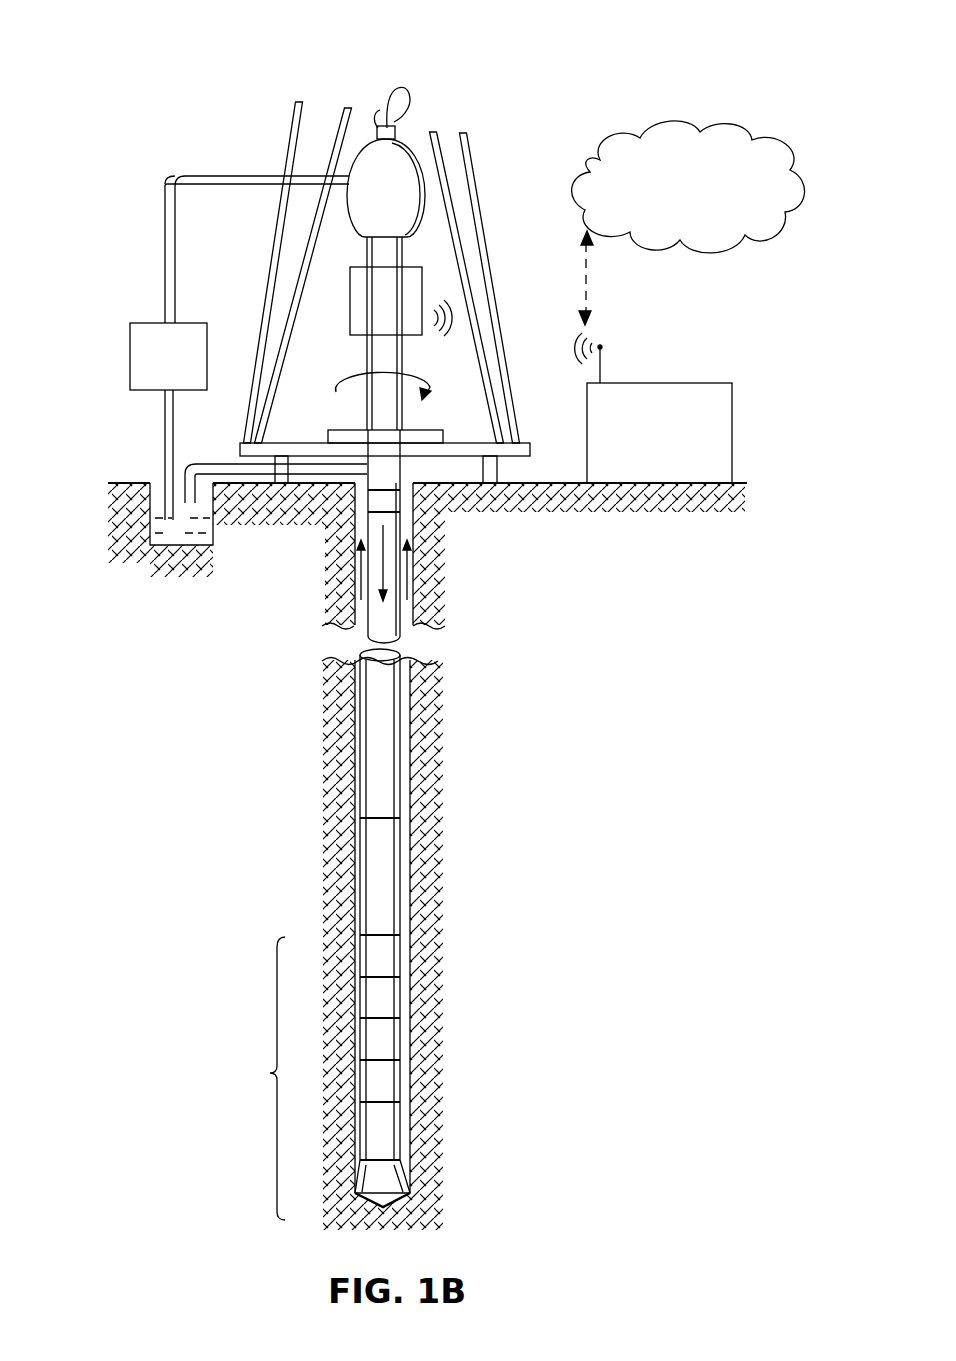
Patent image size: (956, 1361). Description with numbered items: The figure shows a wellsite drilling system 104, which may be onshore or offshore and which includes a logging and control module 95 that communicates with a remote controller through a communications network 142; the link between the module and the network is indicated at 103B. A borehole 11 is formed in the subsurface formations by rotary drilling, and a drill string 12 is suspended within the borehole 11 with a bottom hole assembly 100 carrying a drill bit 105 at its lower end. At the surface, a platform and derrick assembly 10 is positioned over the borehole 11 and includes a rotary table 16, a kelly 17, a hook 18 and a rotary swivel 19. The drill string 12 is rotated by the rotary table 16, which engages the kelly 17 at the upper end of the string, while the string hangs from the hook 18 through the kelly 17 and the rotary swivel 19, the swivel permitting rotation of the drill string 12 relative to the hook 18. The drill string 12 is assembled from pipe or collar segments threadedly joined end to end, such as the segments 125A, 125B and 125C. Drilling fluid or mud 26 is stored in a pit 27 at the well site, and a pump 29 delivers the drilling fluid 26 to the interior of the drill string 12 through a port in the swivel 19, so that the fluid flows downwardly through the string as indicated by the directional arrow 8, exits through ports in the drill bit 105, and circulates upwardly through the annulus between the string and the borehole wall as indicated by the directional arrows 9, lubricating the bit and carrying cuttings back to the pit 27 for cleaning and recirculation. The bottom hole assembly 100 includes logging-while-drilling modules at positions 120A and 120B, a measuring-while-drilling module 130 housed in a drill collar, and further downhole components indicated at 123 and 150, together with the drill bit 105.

The wellsite drilling system 104 is at (264, 30).
The platform and derrick assembly 10 is at (510, 170).
The hook 18 is at (385, 95).
The rotary swivel 19 is at (374, 222).
The kelly 17 is at (378, 415).
The drill string 12 is at (383, 480).
The rotary table 16 is at (424, 431).
The borehole 11 is at (414, 478).
The pump 29 is at (146, 392).
The pit 27 is at (153, 476).
The drilling fluid 26 is at (183, 545).
The directional arrows 9 is at (360, 553).
The directional arrow 8 is at (383, 563).
The segment 125A is at (392, 620).
The segment 125B is at (392, 782).
The segment 125C is at (392, 884).
The downhole tool 123 is at (397, 960).
The LWD module 120B is at (397, 997).
The MWD module 130 is at (397, 1043).
The LWD module 120A is at (397, 1083).
The drill collar 150 is at (397, 1133).
The drill bit 105 is at (397, 1172).
The bottom hole assembly 100 is at (270, 1073).
The communications network 142 is at (688, 177).
The communication link 103B is at (612, 278).
The logging and control module 95 is at (656, 408).